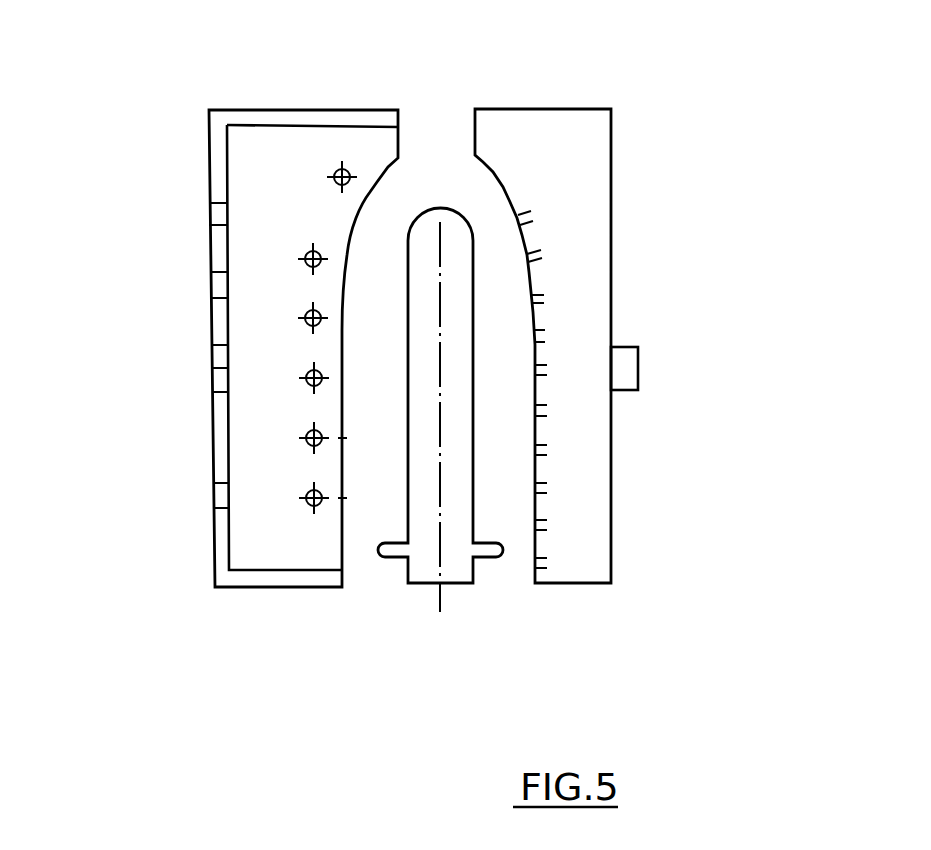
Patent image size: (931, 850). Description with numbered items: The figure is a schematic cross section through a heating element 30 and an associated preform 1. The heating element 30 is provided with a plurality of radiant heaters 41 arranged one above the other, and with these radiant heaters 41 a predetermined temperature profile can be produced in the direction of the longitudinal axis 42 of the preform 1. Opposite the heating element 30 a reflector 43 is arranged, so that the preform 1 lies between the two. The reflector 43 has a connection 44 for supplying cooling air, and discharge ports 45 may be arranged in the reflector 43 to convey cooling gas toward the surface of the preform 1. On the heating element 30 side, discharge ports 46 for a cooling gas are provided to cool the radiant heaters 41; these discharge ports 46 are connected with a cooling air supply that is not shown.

The preform 1 is at (477, 572).
The heating element 30 is at (212, 426).
The radiant heaters 41 is at (342, 168).
The longitudinal axis 42 is at (440, 600).
The reflector 43 is at (542, 123).
The connection 44 is at (630, 360).
The discharge ports 45 is at (545, 525).
The discharge ports 46 is at (222, 497).